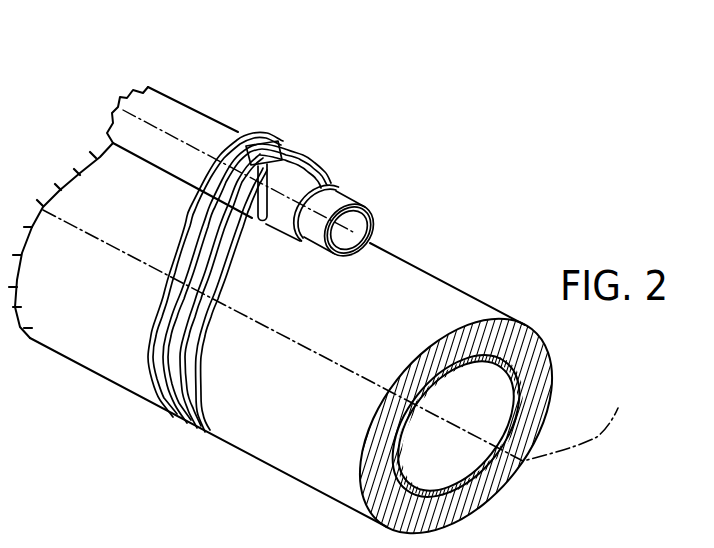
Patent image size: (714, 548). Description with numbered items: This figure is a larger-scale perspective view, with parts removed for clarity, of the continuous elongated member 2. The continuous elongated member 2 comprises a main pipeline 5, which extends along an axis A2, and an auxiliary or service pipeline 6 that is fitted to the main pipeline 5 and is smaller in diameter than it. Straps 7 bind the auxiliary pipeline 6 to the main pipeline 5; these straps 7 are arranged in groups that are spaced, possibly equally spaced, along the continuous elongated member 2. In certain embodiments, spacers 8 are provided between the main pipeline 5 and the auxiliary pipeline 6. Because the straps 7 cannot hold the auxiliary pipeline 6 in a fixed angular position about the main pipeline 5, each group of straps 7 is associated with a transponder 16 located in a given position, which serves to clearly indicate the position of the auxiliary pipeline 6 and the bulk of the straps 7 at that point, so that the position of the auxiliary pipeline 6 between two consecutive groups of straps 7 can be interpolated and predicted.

The continuous elongated member 2 is at (487, 254).
The main pipeline 5 is at (427, 260).
The auxiliary pipeline 6 is at (210, 110).
The straps 7 is at (154, 326).
The spacers 8 is at (264, 243).
The transponder 16 is at (283, 143).
The axis of the main pipeline A2 is at (342, 335).